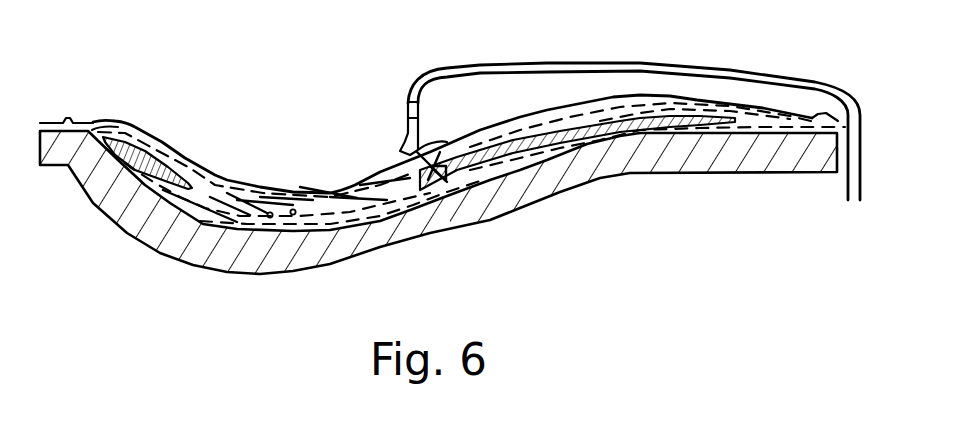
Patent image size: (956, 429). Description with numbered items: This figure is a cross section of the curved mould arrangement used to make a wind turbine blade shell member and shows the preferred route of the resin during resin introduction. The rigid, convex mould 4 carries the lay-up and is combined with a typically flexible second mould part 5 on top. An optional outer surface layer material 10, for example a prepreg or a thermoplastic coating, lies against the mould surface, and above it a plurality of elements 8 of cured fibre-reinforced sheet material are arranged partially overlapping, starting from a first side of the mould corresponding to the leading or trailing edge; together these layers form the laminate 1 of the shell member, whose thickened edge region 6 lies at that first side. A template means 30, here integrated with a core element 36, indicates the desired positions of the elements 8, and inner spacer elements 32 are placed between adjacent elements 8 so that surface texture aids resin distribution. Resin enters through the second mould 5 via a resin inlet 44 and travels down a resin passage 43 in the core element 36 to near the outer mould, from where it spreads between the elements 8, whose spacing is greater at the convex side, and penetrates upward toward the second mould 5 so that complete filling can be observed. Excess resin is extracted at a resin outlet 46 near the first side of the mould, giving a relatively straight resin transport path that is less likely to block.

The sensor layer 1 is at (330, 190).
The mould 4 is at (387, 247).
The second mould part 5 is at (217, 174).
The thickened edge portion 6 is at (146, 143).
The elements of cured fibre-reinforced sheet material 8 is at (238, 218).
The outer surface layer material 10 is at (733, 128).
The template means 30 is at (212, 182).
The inner spacer elements 32 is at (295, 216).
The core element 36 is at (513, 140).
The resin passage 43 is at (447, 184).
The resin inlet 44 is at (638, 70).
The resin outlet 46 is at (68, 120).